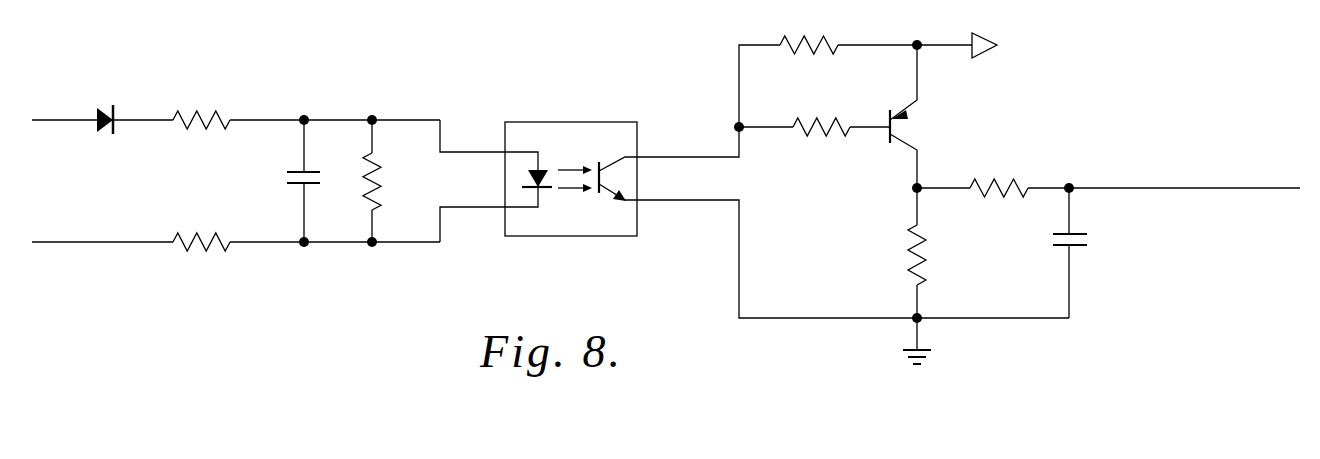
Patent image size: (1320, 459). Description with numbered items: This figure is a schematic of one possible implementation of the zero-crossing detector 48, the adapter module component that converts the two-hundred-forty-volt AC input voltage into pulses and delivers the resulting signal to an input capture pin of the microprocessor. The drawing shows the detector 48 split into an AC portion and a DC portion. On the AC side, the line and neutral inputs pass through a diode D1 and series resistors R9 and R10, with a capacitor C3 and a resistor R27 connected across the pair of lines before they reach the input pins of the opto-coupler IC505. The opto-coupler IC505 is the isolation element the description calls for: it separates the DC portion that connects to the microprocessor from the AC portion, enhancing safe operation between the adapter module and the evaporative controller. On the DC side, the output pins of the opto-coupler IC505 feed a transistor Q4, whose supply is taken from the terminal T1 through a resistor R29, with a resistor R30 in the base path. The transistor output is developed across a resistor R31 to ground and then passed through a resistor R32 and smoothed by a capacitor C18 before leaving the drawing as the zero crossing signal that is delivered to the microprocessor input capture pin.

The zero-crossing detector 48 is at (1100, 349).
The diode D1 is at (106, 105).
The resistor R9 is at (201, 108).
The resistor R10 is at (201, 230).
The capacitor C3 is at (286, 181).
The resistor R27 is at (392, 181).
The optocoupler IC505 is at (569, 167).
The resistor R29 is at (809, 33).
The resistor R30 is at (821, 114).
The +3.3V supply terminal T1 is at (1002, 35).
The transistor Q4 is at (920, 116).
The resistor R32 is at (999, 175).
The resistor R31 is at (897, 253).
The capacitor C18 is at (1093, 253).